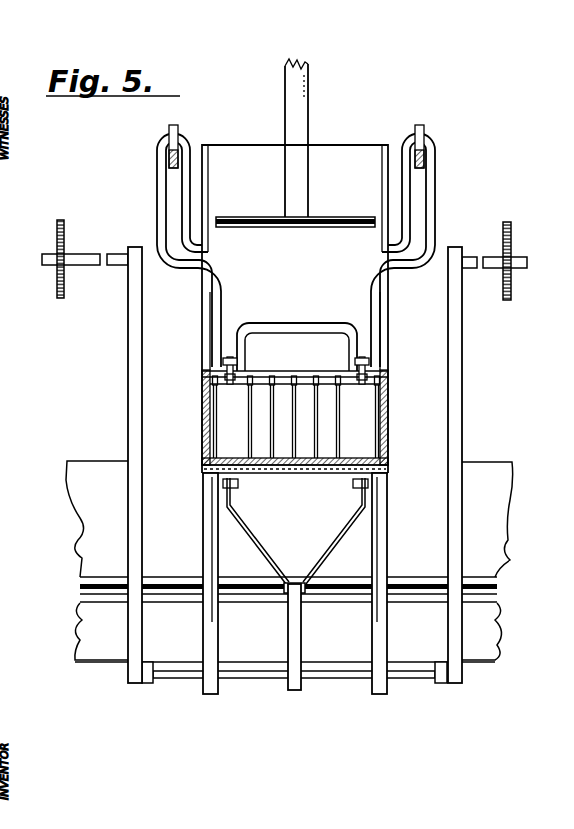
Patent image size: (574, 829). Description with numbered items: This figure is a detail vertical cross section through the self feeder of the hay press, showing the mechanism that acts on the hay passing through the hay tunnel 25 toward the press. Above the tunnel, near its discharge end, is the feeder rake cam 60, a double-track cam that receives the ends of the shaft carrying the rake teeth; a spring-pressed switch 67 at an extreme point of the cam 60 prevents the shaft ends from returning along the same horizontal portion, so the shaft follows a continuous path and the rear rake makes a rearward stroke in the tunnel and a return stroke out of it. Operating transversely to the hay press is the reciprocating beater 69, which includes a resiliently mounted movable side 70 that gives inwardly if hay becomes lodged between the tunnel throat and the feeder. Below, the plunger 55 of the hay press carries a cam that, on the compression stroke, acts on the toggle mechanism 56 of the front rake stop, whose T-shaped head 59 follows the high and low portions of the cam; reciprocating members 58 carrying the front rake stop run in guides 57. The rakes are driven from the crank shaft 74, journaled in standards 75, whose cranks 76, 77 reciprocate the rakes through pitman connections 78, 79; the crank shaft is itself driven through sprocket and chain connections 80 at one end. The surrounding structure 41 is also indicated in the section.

The hay tunnel 25 is at (384, 447).
The floor or supporting wall 41 is at (100, 577).
The plunger 55 is at (372, 420).
The toggle mechanism 56 is at (298, 630).
The guides 57 is at (208, 630).
The reciprocating members 58 is at (216, 548).
The head 59 is at (293, 577).
The feeder rake cam 60 is at (205, 363).
The switch 67 is at (284, 372).
The reciprocating beater 69 is at (228, 218).
The movable side 70 is at (307, 240).
The crank shaft 74 is at (43, 259).
The standards 75 is at (129, 383).
The crank 76 is at (158, 192).
The crank 77 is at (222, 303).
The pitman connection 78 is at (176, 126).
The pitman connection 79 is at (222, 373).
The sprocket and chain connections 80 is at (514, 242).